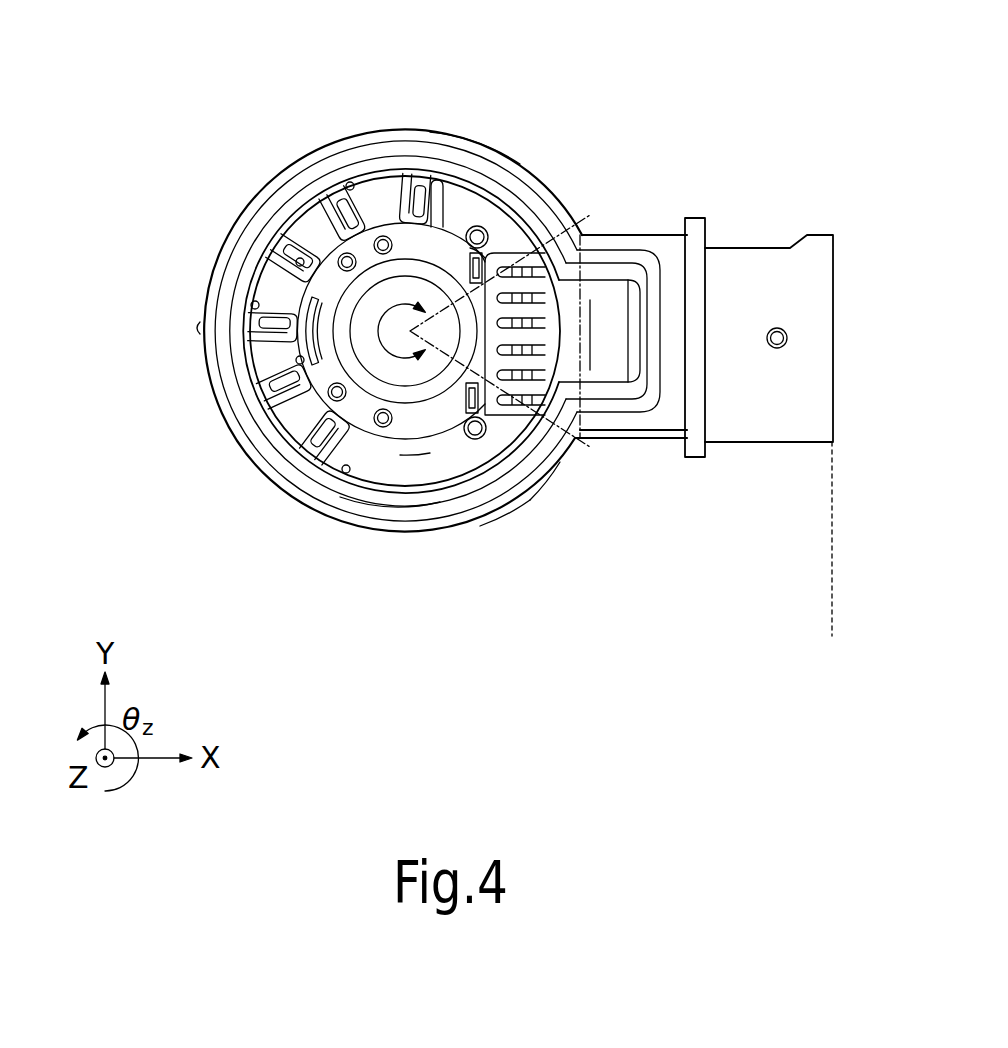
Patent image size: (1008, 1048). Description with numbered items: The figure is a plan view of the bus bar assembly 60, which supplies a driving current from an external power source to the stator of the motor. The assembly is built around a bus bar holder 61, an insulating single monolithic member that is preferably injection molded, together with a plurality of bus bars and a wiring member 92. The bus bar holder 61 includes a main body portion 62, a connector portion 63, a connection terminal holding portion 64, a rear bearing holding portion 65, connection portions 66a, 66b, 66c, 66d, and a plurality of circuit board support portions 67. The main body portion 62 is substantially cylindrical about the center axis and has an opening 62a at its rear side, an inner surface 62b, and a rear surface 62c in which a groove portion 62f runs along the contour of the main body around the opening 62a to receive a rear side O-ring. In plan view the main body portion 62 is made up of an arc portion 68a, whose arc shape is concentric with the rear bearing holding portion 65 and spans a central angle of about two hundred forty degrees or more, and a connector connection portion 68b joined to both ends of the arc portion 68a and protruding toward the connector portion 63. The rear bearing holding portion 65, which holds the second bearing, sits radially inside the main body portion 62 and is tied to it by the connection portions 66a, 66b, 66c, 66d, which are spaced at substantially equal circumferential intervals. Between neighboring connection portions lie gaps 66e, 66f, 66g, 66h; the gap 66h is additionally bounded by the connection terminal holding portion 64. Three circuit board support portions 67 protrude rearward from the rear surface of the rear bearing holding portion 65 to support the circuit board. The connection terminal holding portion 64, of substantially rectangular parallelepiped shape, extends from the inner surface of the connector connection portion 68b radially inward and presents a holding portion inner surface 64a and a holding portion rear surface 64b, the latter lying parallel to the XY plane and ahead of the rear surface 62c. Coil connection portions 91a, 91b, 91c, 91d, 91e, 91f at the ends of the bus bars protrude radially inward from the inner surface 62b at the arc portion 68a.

The bus bar assembly 60 is at (730, 93).
The bus bar holder 61 is at (493, 133).
The main body portion 62 is at (197, 330).
The opening 62a is at (547, 602).
The inner surface of the main body portion 62b is at (507, 510).
The rear surface of the main body portion 62c is at (668, 440).
The groove portion 62f is at (395, 505).
The connector portion 63 is at (832, 618).
The connection terminal holding portion 64 is at (597, 290).
The holding portion inner surface 64a is at (673, 307).
The holding portion rear surface 64b is at (595, 373).
The rear bearing holding portion 65 is at (417, 243).
The connection portion 66a is at (415, 462).
The connection portion 66b is at (267, 355).
The connection portion 66c is at (338, 200).
The connection portion 66d is at (492, 256).
The gap 66e is at (333, 447).
The gap 66f is at (290, 248).
The gap 66g is at (440, 178).
The gap 66h is at (522, 253).
The circuit board support portion 67 is at (481, 228).
The arc portion 68a is at (257, 315).
The connector connection portion 68b is at (708, 300).
The coil connection portion 91a is at (346, 469).
The coil connection portion 91b is at (310, 345).
The coil connection portion 91c is at (260, 313).
The coil connection portion 91d is at (300, 262).
The coil connection portion 91e is at (348, 178).
The coil connection portion 91f is at (417, 178).
The wiring member 92 is at (483, 268).